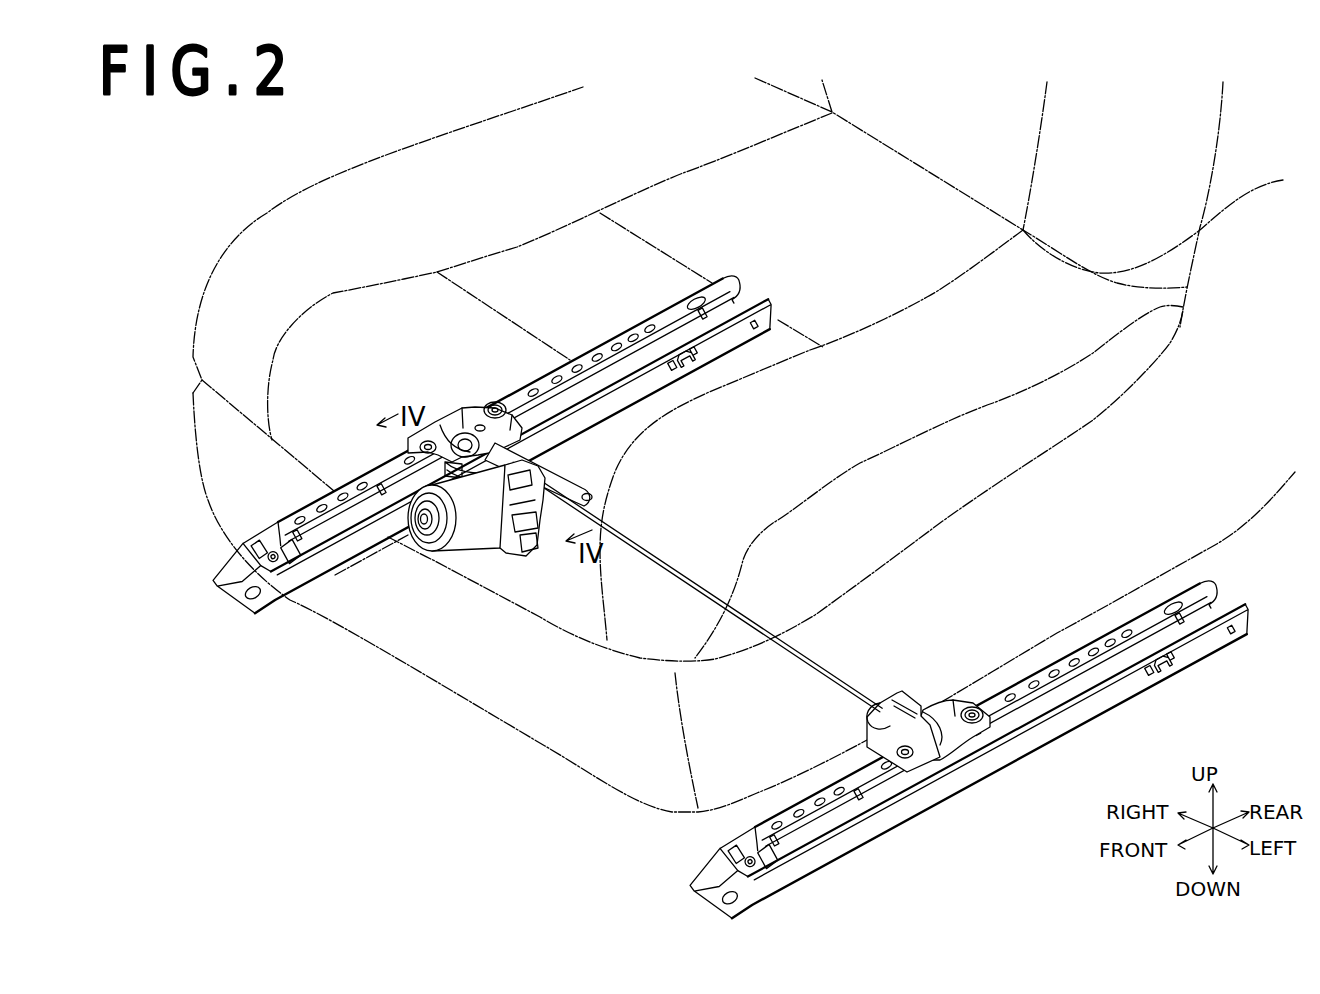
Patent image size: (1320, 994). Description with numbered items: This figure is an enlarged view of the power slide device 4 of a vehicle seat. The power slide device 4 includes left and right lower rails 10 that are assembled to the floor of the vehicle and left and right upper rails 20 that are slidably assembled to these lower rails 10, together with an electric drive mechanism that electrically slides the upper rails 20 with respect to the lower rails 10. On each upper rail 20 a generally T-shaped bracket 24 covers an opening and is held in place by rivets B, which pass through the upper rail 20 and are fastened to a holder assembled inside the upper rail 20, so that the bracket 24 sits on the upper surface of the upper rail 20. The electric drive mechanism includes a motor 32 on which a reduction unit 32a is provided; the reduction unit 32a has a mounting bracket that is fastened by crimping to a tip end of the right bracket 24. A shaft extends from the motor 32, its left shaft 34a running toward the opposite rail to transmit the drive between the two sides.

The power slide device 4 is at (414, 790).
The lower rail 10 is at (350, 550).
The upper rail 20 is at (518, 403).
The bracket 24 is at (550, 480).
The rivet B is at (490, 404).
The motor 32 is at (471, 552).
The reduction unit 32a is at (535, 555).
The left shaft 34a is at (693, 577).